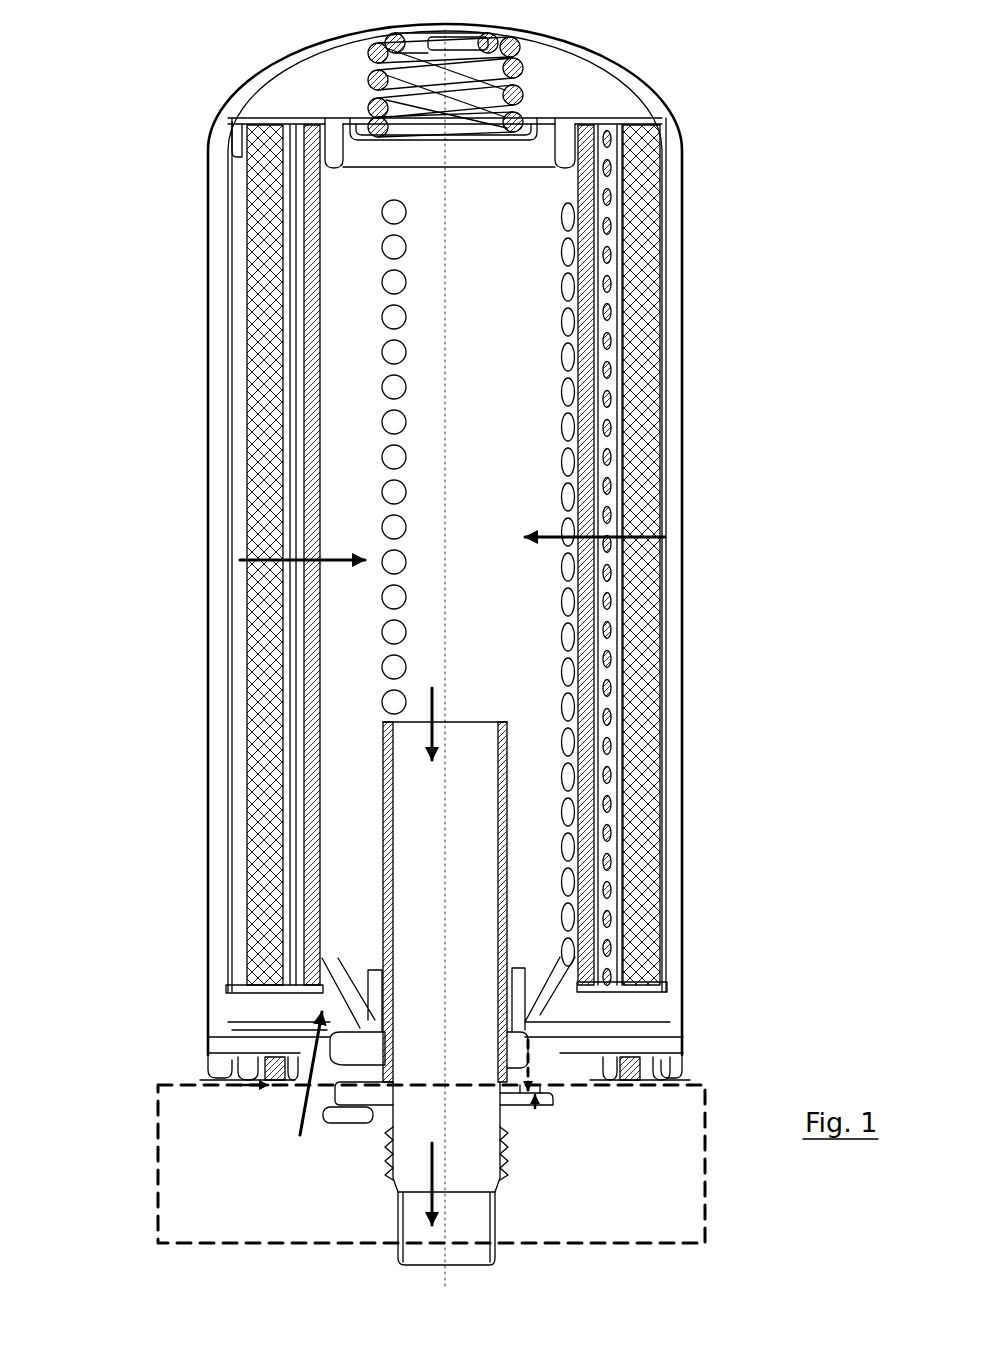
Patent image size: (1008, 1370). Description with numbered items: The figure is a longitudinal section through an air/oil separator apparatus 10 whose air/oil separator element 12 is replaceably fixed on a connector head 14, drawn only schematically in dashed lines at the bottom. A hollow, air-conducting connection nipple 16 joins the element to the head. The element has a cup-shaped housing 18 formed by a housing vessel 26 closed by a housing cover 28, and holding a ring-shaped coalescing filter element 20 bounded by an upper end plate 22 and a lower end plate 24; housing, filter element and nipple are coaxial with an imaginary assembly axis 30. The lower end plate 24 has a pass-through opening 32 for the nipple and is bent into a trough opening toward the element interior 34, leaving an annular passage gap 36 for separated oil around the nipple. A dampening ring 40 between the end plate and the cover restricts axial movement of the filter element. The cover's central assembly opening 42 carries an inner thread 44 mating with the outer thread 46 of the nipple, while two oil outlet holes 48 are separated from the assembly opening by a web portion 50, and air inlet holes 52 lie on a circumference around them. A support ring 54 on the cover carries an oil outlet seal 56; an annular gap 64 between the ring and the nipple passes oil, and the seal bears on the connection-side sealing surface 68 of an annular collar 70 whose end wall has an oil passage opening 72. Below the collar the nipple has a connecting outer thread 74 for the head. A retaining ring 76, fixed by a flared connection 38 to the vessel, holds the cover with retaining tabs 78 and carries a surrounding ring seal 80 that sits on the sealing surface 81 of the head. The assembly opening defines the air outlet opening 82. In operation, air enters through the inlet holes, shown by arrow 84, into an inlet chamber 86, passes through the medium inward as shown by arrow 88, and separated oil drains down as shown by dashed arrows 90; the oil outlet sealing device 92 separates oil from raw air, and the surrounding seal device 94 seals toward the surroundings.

The air/oil separator apparatus 10 is at (130, 70).
The air/oil separator element 12 is at (190, 207).
The connector head 14 is at (156, 1145).
The connection nipple 16 is at (496, 806).
The housing 18 is at (207, 342).
The filter element 20 is at (245, 487).
The upper end plate 22 is at (684, 128).
The lower end plate 24 is at (668, 988).
The housing vessel 26 is at (683, 300).
The housing cover 28 is at (240, 1040).
The assembly axis 30 is at (446, 258).
The pass-through opening 32 is at (362, 952).
The element interior 34 is at (519, 442).
The passage gap 36 is at (517, 960).
The flared connection 38 is at (668, 1065).
The dampening ring 40 is at (580, 1028).
The assembly opening 42 is at (543, 957).
The inner thread 44 is at (516, 1040).
The outer thread 46 is at (388, 1050).
The oil outlet holes 48 is at (548, 1087).
The web portion 50 is at (512, 1032).
The air inlet holes 52 is at (312, 1037).
The support ring 54 is at (380, 1080).
The oil outlet seal 56 is at (550, 1098).
The annular gap 64 is at (512, 1100).
The connection-side sealing surface 68 is at (548, 1110).
The annular collar 70 is at (352, 1128).
The connection-side oil passage opening 72 is at (372, 1105).
The connecting outer thread 74 is at (510, 1178).
The retaining ring 76 is at (658, 1090).
The retaining tabs 78 is at (325, 1022).
The surrounding ring seal 80 is at (270, 1088).
The surrounding sealing surface 81 is at (282, 1085).
The air outlet opening 82 is at (433, 997).
The arrow 84 is at (300, 1138).
The inlet chamber 86 is at (660, 998).
The arrow 88 is at (668, 540).
The dashed arrows 90 is at (545, 880).
The oil outlet sealing device 92 is at (535, 1112).
The surrounding seal device 94 is at (250, 1085).